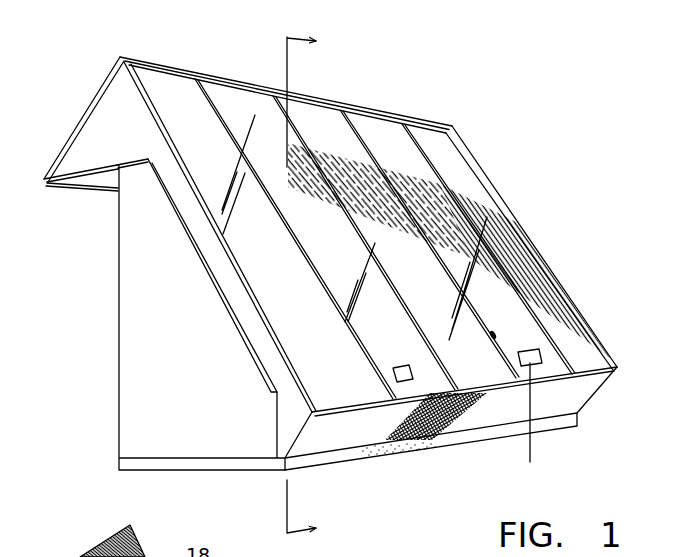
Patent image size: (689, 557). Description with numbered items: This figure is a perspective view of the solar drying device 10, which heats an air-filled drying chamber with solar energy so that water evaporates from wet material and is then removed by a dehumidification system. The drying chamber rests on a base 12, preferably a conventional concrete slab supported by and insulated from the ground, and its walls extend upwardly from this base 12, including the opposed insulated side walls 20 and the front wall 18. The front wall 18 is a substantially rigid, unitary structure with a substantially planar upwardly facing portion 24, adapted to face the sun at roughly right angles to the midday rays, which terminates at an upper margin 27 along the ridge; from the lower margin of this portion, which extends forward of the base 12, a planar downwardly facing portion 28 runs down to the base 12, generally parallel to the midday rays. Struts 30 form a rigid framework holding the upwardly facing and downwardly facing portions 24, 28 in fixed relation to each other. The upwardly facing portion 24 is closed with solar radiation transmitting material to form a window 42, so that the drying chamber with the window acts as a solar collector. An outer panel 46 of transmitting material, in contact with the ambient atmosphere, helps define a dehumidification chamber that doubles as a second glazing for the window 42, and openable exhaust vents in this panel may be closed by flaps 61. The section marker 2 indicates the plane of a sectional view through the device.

The greenhouse structure 10 is at (463, 143).
The eave fascia 12 is at (370, 455).
The gable edge member 18 is at (490, 194).
The end wall 20 is at (122, 253).
The lower glazing region 24 is at (537, 256).
The ridge member (FIG. 2 fragment) 27 is at (133, 543).
The base plate 28 is at (590, 401).
The glazing bar 30 is at (352, 128).
The glazing panel 42 is at (232, 93).
The vent screen 46 is at (397, 392).
The vent opening 61 is at (413, 379).
The section line 2- 2 is at (310, 286).